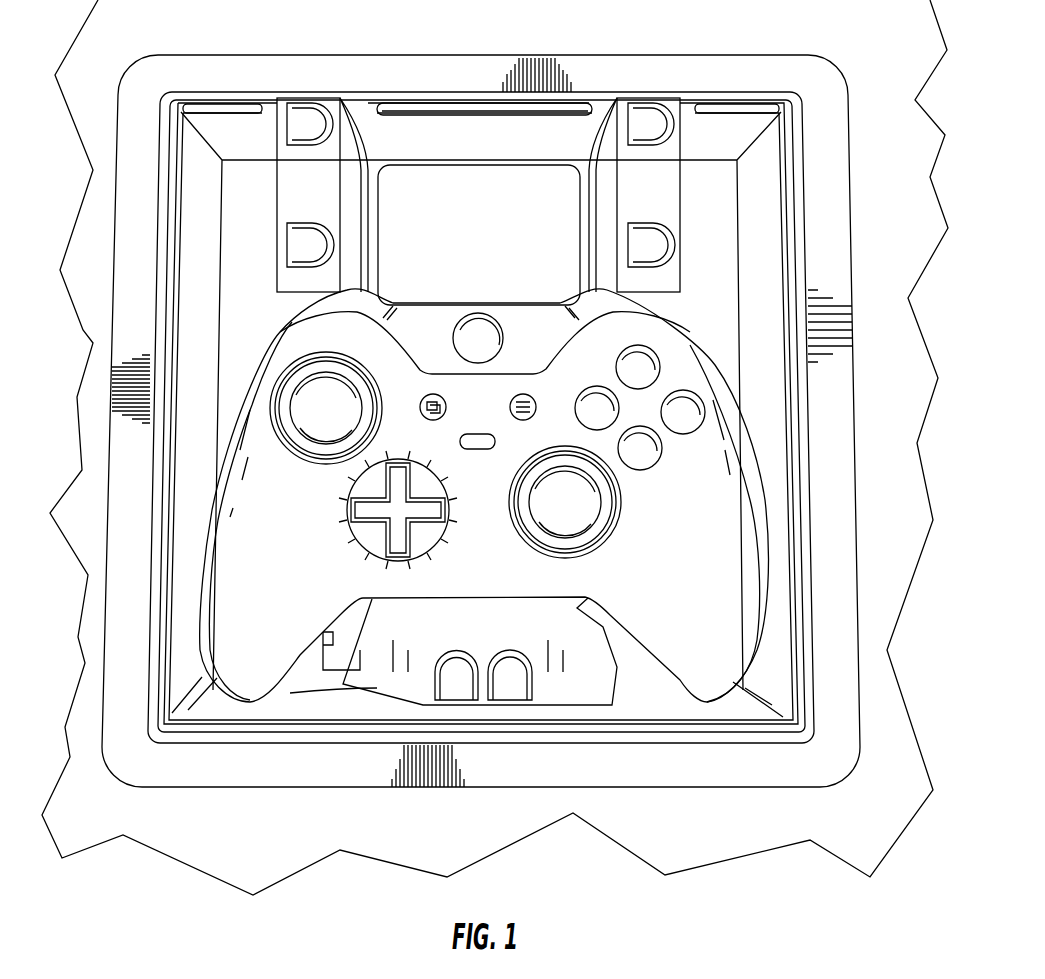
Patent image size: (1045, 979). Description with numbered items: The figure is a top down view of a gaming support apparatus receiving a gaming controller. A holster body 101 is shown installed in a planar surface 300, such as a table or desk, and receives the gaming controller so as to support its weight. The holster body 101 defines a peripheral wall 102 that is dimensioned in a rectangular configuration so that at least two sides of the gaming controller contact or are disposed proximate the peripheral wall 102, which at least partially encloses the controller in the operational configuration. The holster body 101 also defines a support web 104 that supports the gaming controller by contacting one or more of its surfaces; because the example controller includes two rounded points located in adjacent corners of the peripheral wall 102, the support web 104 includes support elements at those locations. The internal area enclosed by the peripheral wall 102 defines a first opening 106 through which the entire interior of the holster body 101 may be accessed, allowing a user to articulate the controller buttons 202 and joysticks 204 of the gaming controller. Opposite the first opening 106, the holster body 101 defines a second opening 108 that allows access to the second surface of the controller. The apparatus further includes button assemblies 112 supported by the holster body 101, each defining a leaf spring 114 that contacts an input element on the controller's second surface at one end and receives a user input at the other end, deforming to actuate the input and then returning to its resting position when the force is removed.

The holster body 101 is at (882, 80).
The peripheral wall 102 is at (476, 68).
The support web 104 is at (293, 680).
The first opening 106 is at (790, 297).
The second opening 108 is at (553, 172).
The button assembly 112 is at (484, 645).
The leaf spring 114 is at (298, 238).
The controller buttons 202 is at (602, 408).
The joysticks 204 is at (535, 497).
The planar surface 300 is at (473, 495).